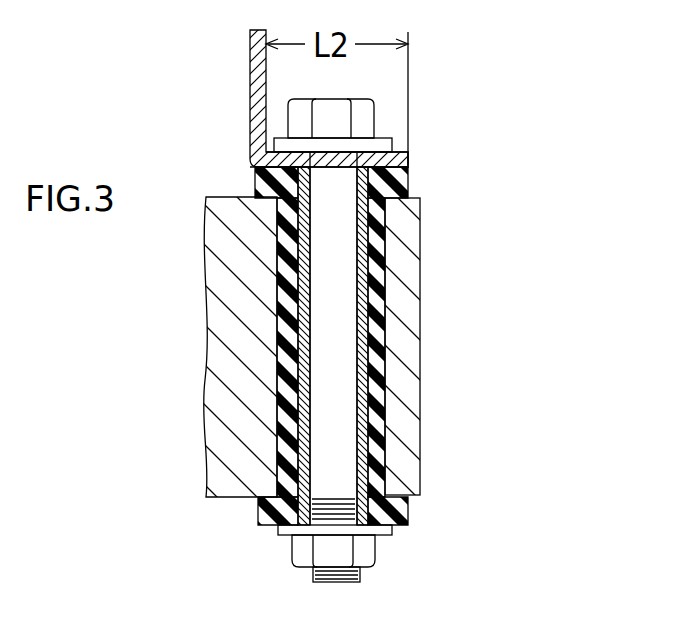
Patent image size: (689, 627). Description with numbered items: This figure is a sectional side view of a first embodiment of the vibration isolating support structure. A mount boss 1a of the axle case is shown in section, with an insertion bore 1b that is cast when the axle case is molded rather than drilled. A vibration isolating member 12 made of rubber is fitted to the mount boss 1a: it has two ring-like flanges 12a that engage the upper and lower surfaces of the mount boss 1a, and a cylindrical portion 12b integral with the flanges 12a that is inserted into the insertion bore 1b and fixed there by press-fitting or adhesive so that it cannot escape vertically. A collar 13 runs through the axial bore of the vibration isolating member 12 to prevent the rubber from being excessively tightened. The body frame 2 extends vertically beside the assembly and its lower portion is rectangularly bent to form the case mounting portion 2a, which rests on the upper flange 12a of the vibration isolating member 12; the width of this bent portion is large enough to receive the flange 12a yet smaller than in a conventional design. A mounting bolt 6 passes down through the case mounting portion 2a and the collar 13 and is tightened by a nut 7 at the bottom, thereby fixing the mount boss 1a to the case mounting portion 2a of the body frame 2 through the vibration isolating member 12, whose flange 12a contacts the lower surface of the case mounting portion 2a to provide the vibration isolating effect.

The mount boss 1a is at (422, 315).
The insertion bore 1b is at (388, 378).
The body frame 2 is at (338, 98).
The case mounting portion 2a is at (408, 160).
The mounting bolt 6 is at (288, 118).
The nut 7 is at (372, 548).
The vibration isolating member 12 is at (373, 359).
The flange 12a is at (405, 177).
The cylindrical portion 12b is at (378, 280).
The collar 13 is at (357, 377).